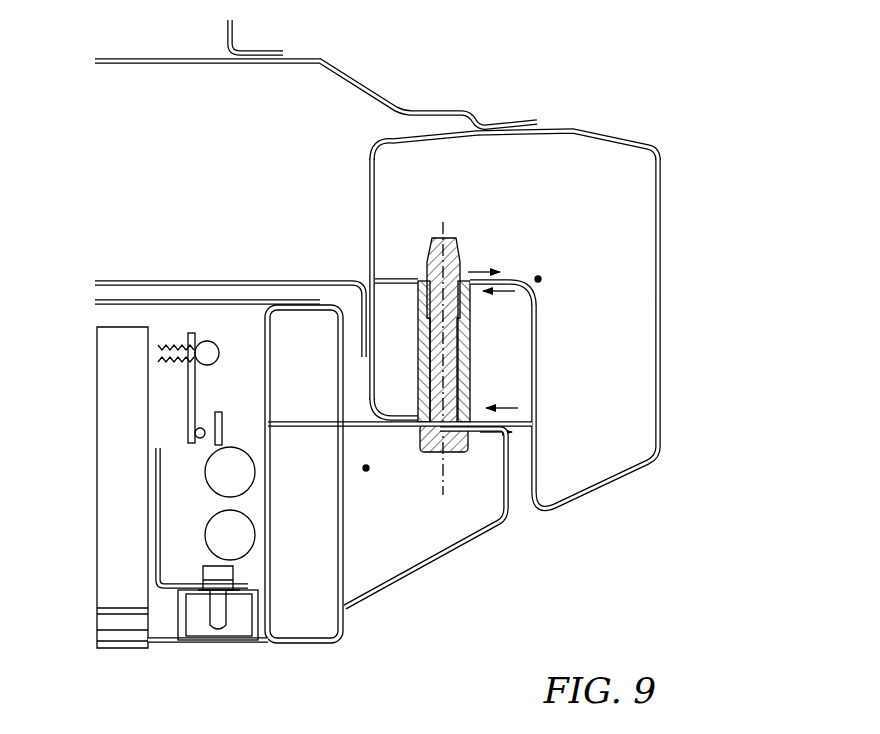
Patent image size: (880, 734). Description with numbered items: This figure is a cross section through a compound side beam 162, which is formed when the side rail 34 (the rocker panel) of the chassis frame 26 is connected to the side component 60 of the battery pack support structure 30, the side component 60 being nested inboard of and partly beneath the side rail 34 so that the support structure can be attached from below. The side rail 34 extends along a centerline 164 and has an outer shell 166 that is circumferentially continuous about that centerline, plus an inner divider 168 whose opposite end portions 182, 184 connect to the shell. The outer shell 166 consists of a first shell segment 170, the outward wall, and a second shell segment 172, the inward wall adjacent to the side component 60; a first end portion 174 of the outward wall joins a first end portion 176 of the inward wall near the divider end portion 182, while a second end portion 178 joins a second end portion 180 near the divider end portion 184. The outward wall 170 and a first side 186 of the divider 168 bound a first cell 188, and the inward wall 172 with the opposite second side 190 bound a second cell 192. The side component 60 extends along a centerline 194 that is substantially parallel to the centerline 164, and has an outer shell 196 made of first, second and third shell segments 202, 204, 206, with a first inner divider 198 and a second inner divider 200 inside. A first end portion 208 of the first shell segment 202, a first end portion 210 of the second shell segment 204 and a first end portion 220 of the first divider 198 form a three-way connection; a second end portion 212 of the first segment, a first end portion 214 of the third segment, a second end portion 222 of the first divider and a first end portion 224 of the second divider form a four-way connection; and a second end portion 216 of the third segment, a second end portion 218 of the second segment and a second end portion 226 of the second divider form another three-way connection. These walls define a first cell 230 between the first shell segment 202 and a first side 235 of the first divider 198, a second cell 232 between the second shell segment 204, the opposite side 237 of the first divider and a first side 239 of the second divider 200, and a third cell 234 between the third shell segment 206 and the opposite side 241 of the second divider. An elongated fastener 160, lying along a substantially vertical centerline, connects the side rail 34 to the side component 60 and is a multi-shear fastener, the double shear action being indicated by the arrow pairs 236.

The chassis frame 26 is at (644, 74).
The side rail 34 is at (646, 112).
The battery pack support structure 30 is at (431, 632).
The side component 60 is at (361, 634).
The fastener 160 is at (450, 230).
The compound side beam 162 is at (613, 544).
The centerline 164 is at (542, 278).
The outer shell 166 is at (664, 340).
The inner divider 168 is at (541, 372).
The first shell segment 170 is at (663, 297).
The second shell segment 172 is at (363, 357).
The first end portion of first shell segment 174 is at (370, 262).
The first end portion of second shell segment 176 is at (376, 293).
The second end portion of first shell segment 178 is at (538, 452).
The second end portion of second shell segment 180 is at (528, 412).
The end portion of inner divider 182 is at (385, 278).
The end portion of inner divider 184 is at (538, 414).
The first side of divider 186 is at (518, 275).
The first cell 188 is at (488, 176).
The second side of divider 190 is at (530, 345).
The second cell 192 is at (378, 377).
The centerline 194 is at (366, 472).
The outer shell 196 is at (427, 575).
The first inner divider 198 is at (350, 570).
The second inner divider 200 is at (313, 432).
The first outer shell segment 202 is at (510, 518).
The second outer shell segment 204 is at (258, 592).
The third outer shell segment 206 is at (262, 337).
The first end portion of first shell segment 208 is at (362, 605).
The first end portion of second shell segment 210 is at (320, 641).
The second end portion of first shell segment 212 is at (362, 428).
The first end portion of third shell segment 214 is at (327, 420).
The second end portion of third shell segment 216 is at (281, 412).
The second end portion of second shell segment 218 is at (262, 433).
The first end portion of first divider 220 is at (343, 600).
The second end portion of first divider 222 is at (337, 445).
The first end portion of second divider 224 is at (345, 423).
The second end portion of second divider 226 is at (263, 413).
The first cell 230 is at (453, 529).
The second cell 232 is at (285, 559).
The third cell 234 is at (285, 335).
The first side of first divider 235 is at (347, 543).
The arrow pairs 236 is at (488, 268).
The opposite side of first divider 237 is at (343, 550).
The first side of second divider 239 is at (305, 420).
The opposite side of second divider 241 is at (262, 452).